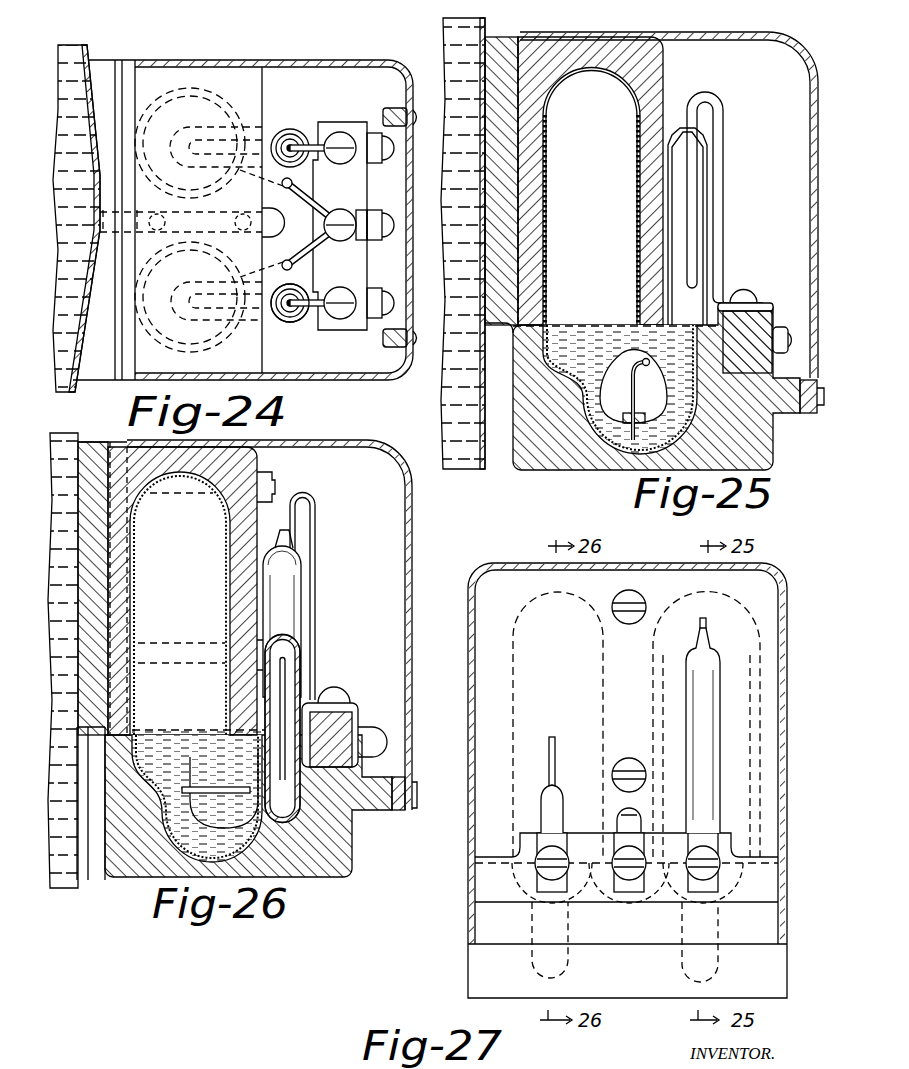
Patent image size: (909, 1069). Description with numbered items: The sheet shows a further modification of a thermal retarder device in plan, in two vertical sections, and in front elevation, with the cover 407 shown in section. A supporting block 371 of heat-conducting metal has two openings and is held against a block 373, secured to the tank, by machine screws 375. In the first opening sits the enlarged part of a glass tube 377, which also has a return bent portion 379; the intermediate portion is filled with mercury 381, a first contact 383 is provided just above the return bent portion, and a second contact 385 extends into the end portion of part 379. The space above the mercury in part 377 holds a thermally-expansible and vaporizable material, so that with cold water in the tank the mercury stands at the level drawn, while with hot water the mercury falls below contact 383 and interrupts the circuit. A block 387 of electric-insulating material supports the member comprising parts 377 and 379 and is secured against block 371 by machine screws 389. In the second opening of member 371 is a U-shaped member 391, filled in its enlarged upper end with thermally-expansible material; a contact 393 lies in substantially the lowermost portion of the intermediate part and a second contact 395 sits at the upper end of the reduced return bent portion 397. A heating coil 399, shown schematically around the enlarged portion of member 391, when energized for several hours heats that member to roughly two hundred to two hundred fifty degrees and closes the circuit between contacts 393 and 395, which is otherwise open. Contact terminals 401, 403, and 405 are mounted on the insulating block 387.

In FIG. 24, the supporting block 371 is at (122, 381).
In FIG. 25, the supporting block 371 is at (665, 73).
In FIG. 25, the block 373 is at (495, 340).
In FIG. 26, the block 373 is at (77, 674).
In FIG. 24, the machine screws 375 is at (262, 214).
In FIG. 26, the machine screws 375 is at (276, 483).
In FIG. 27, the machine screws 375 is at (645, 600).
In FIG. 24, the glass tube 377 is at (198, 337).
In FIG. 26, the glass tube 377 is at (222, 553).
In FIG. 24, the return bent portion 379 is at (280, 322).
In FIG. 26, the return bent portion 379 is at (332, 703).
In FIG. 26, the mercury 381 is at (216, 796).
In FIG. 26, the first contact 383 is at (222, 790).
In FIG. 26, the second contact 385 is at (301, 697).
In FIG. 24, the block of electric-insulating material 387 is at (343, 330).
In FIG. 25, the block of electric-insulating material 387 is at (774, 441).
In FIG. 26, the block of electric-insulating material 387 is at (353, 851).
In FIG. 24, the machine screws 389 is at (158, 231).
In FIG. 26, the machine screws 389 is at (138, 868).
In FIG. 24, the member of U-shape 391 is at (191, 97).
In FIG. 25, the member of U-shape 391 is at (629, 100).
In FIG. 25, the contact 393 is at (622, 368).
In FIG. 25, the second contact 395 is at (691, 225).
In FIG. 25, the reduced return bent portion 397 is at (706, 255).
In FIG. 24, the heating coil 399 is at (163, 93).
In FIG. 25, the heating coil 399 is at (549, 203).
In FIG. 24, the contact terminal 401 is at (368, 288).
In FIG. 27, the contact terminal 401 is at (530, 877).
In FIG. 24, the contact terminal 403 is at (366, 211).
In FIG. 27, the contact terminal 403 is at (616, 877).
In FIG. 24, the contact terminal 405 is at (369, 124).
In FIG. 25, the contact terminal 405 is at (775, 320).
In FIG. 27, the contact terminal 405 is at (735, 900).
In FIG. 24, the cover 407 is at (317, 54).
In FIG. 25, the cover 407 is at (812, 87).
In FIG. 26, the cover 407 is at (413, 639).
In FIG. 27, the cover 407 is at (474, 653).